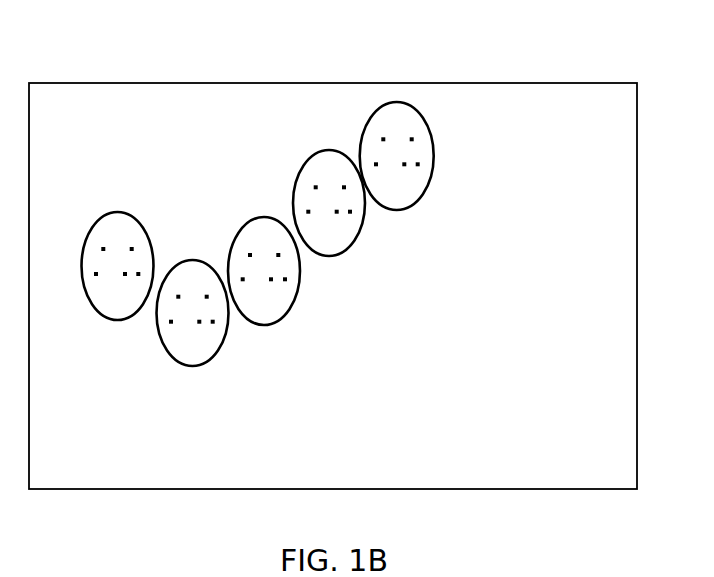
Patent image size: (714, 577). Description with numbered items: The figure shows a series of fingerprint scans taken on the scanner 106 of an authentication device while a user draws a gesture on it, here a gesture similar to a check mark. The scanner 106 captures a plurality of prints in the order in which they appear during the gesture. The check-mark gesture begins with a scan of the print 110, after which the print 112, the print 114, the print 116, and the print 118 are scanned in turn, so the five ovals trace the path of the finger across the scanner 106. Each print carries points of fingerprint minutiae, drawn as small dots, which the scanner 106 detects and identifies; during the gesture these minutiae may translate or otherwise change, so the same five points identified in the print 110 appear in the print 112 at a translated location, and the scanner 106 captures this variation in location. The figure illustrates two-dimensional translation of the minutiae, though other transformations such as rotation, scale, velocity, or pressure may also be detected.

The scanner 106 is at (592, 464).
The print 110 is at (118, 212).
The print 112 is at (192, 259).
The print 114 is at (262, 217).
The print 116 is at (329, 150).
The print 118 is at (397, 103).